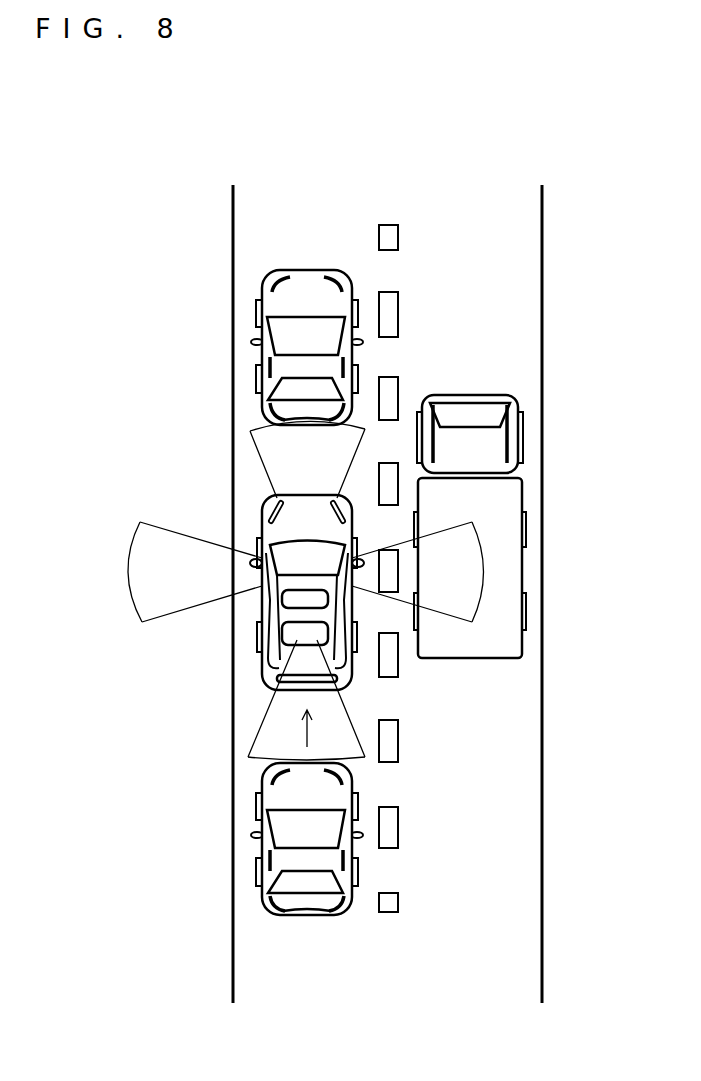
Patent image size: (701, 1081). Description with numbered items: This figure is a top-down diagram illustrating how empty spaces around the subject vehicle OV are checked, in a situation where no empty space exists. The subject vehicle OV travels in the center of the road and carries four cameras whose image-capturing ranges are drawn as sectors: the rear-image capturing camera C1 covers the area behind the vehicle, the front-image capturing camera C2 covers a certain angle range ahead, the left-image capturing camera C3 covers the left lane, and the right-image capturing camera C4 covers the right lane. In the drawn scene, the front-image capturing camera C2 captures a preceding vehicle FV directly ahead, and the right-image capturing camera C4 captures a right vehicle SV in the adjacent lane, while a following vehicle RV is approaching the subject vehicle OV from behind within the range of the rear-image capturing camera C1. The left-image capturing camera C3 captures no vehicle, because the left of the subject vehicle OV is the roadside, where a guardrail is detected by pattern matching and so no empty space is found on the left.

The preceding vehicle FV is at (263, 353).
The following vehicle RV is at (260, 843).
The subject vehicle OV is at (260, 658).
The right vehicle SV is at (522, 498).
The rear-image capturing camera C1 is at (267, 710).
The front-image capturing camera C2 is at (263, 468).
The left-image capturing camera C3 is at (128, 577).
The right-image capturing camera C4 is at (483, 578).